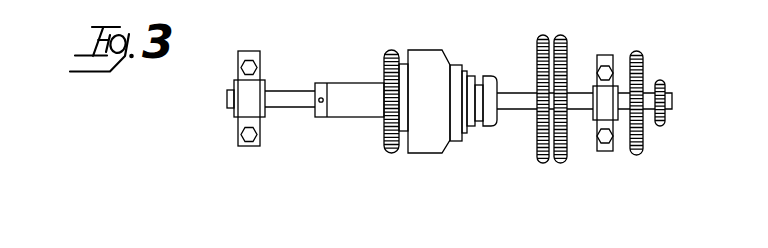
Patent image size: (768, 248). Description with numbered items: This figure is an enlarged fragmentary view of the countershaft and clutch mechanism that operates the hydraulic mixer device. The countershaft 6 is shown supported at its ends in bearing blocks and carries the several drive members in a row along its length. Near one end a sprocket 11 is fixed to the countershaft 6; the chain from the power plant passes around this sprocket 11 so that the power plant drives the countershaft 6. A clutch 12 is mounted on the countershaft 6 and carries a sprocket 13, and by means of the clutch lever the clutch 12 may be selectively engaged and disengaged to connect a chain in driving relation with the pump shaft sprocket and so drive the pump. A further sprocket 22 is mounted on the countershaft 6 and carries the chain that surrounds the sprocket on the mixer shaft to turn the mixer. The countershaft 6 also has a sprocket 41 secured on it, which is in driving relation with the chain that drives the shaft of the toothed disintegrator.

The countershaft 6 is at (287, 103).
The sprocket 13 is at (384, 147).
The clutch 12 is at (423, 145).
The sprocket 11 is at (543, 160).
The sprocket 41 is at (635, 150).
The further sprocket 22 is at (658, 123).